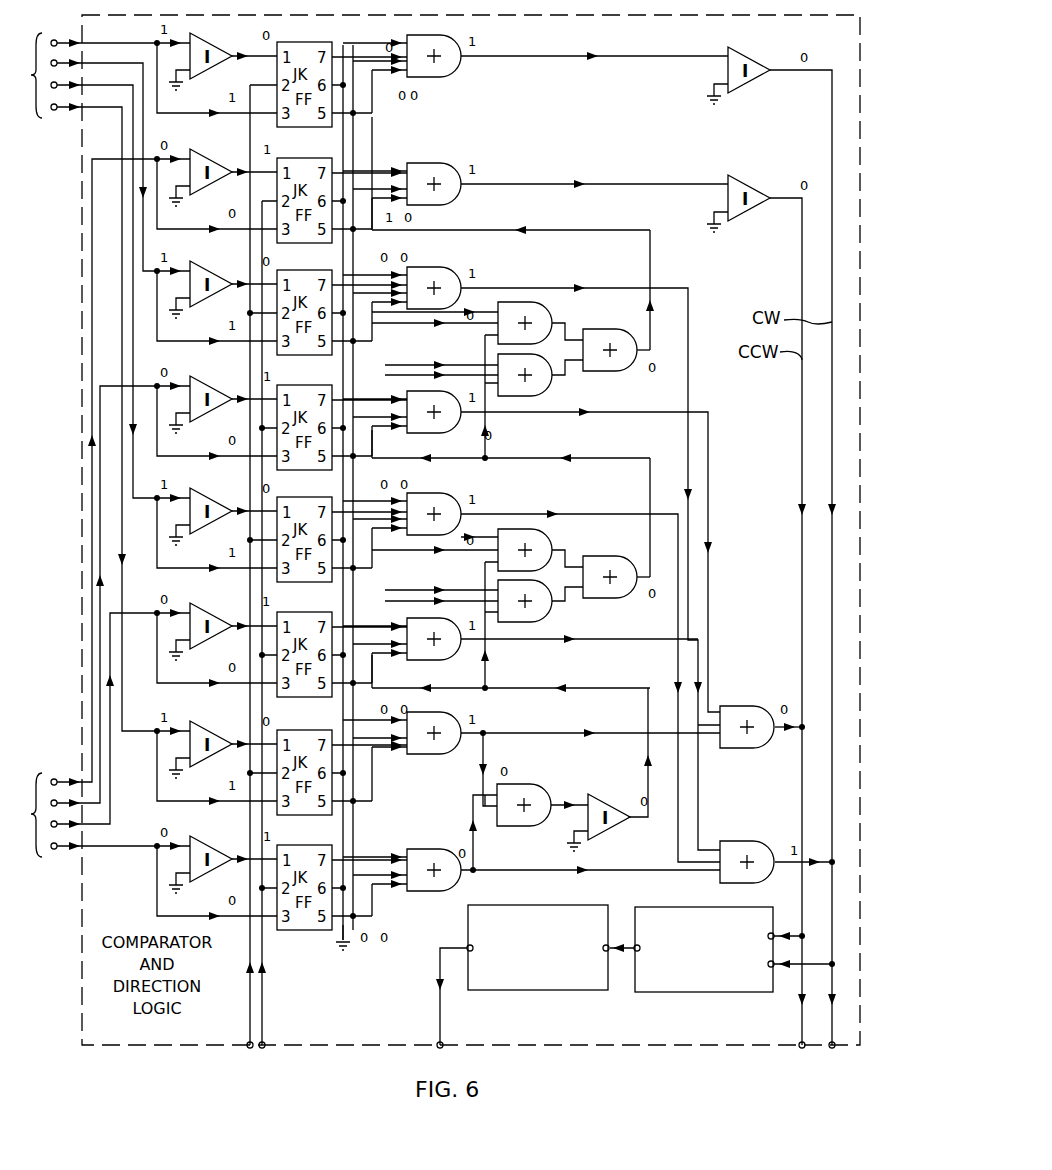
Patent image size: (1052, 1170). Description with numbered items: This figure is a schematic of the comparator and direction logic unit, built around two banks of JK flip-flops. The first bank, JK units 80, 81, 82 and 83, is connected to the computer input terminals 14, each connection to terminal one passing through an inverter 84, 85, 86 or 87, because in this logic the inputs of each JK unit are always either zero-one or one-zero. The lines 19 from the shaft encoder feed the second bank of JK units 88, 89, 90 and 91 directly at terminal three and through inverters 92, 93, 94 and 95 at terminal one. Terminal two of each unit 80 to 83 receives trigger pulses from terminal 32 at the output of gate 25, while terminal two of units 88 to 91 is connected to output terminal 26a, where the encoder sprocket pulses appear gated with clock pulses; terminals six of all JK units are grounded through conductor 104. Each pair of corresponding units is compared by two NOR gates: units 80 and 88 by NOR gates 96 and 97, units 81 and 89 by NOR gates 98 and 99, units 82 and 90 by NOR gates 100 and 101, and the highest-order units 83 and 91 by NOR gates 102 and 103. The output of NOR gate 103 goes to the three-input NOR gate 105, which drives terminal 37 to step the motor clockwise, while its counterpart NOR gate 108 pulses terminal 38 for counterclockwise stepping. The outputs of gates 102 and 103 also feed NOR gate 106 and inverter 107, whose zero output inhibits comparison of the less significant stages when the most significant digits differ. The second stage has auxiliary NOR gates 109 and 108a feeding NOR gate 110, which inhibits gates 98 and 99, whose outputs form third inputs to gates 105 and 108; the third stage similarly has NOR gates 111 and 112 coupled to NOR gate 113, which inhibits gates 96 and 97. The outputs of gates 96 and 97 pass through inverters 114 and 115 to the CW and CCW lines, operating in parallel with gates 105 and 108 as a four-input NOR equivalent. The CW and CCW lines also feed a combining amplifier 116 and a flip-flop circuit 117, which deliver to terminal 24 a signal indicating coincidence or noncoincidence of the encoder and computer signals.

The computer input terminals 14 is at (99, 382).
The lines from the shaft encoder 19 is at (99, 508).
The terminal 24 is at (444, 1042).
The gate 25 is at (622, 16).
The output terminal of JK unit 26a is at (266, 1042).
The terminal 32 is at (246, 1042).
The terminal 37 is at (835, 1042).
The terminal 38 is at (798, 1042).
The JK flip-flop 80 is at (290, 44).
The JK flip-flop 81 is at (288, 270).
The JK flip-flop 82 is at (288, 498).
The JK flip-flop 83 is at (288, 731).
The inverter 84 is at (202, 38).
The inverter 85 is at (202, 270).
The inverter 86 is at (202, 497).
The inverter 87 is at (202, 730).
The JK flip-flop 88 is at (288, 158).
The JK flip-flop 89 is at (288, 386).
The JK flip-flop 90 is at (326, 614).
The JK flip-flop 91 is at (288, 846).
The inverter 92 is at (202, 158).
The inverter 93 is at (202, 385).
The inverter 94 is at (202, 612).
The inverter 95 is at (202, 845).
The NOR gate 96 is at (430, 80).
The NOR gate 97 is at (428, 164).
The NOR gate 98 is at (416, 268).
The NOR gate 99 is at (425, 436).
The NOR gate 100 is at (416, 494).
The NOR gate 101 is at (430, 660).
The NOR gate 102 is at (432, 714).
The NOR gate 103 is at (440, 840).
The conductor 104 is at (350, 938).
The three-input NOR gate 105 is at (748, 842).
The NOR gate 106 is at (514, 784).
The inverter 107 is at (628, 805).
The NOR gate 108 is at (728, 706).
The NOR gate 108a is at (544, 530).
The NOR gate 109 is at (542, 616).
The NOR gate 110 is at (588, 556).
The NOR gate 111 is at (538, 302).
The NOR gate 112 is at (542, 388).
The NOR gate 113 is at (588, 328).
The inverter 114 is at (744, 54).
The inverter 115 is at (744, 182).
The combining amplifier 116 is at (692, 906).
The flip-flop circuit 117 is at (532, 906).